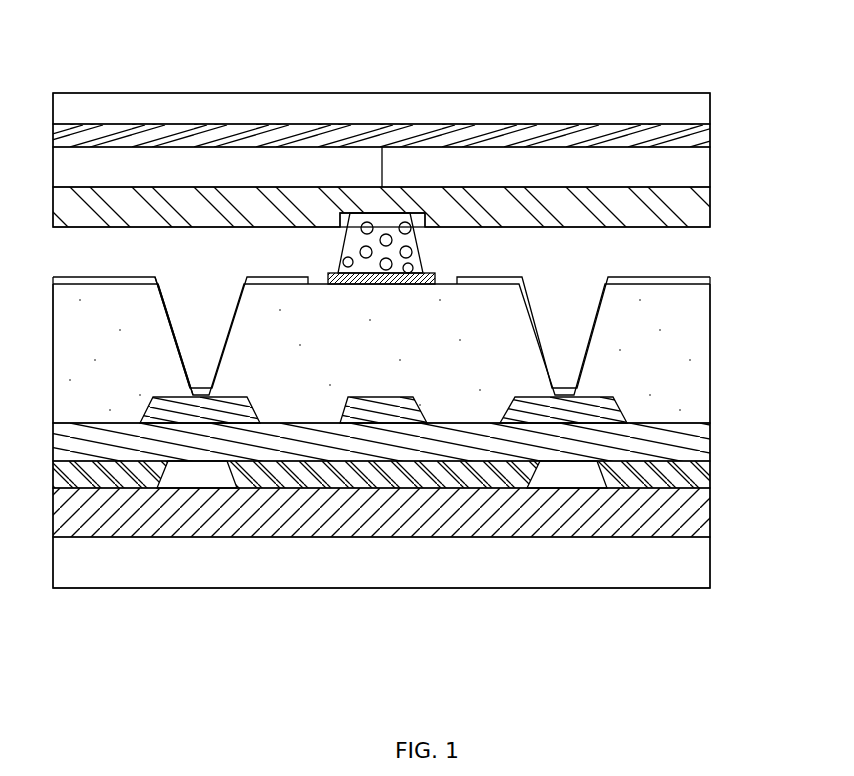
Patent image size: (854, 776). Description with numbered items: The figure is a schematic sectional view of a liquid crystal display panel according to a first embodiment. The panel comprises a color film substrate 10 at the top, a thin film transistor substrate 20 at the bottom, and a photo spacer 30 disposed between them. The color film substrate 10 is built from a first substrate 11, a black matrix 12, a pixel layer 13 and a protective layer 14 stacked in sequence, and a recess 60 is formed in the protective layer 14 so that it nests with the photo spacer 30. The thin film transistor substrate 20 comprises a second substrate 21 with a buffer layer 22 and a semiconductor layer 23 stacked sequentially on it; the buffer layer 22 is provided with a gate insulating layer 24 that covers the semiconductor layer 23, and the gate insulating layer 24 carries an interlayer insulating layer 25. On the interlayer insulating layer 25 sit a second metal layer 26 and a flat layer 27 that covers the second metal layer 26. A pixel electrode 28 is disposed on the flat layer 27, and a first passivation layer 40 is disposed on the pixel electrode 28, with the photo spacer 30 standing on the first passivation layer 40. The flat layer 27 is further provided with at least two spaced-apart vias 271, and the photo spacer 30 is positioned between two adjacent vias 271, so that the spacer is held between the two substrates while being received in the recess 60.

The color film substrate 10 is at (248, 68).
The first substrate 11 is at (710, 105).
The black matrix 12 is at (710, 135).
The pixel layer 13 is at (710, 175).
The protective layer 14 is at (710, 213).
The recess 60 is at (384, 213).
The photo spacer 30 is at (418, 250).
The first passivation layer 40 is at (330, 286).
The thin film transistor substrate 20 is at (268, 628).
The second substrate 21 is at (710, 560).
The buffer layer 22 is at (710, 515).
The semiconductor layer 23 is at (560, 472).
The gate insulating layer 24 is at (710, 475).
The interlayer insulating layer 25 is at (710, 435).
The second metal layer 26 is at (232, 417).
The flat layer 27 is at (710, 357).
The via 271 is at (168, 295).
The pixel electrode 28 is at (710, 278).